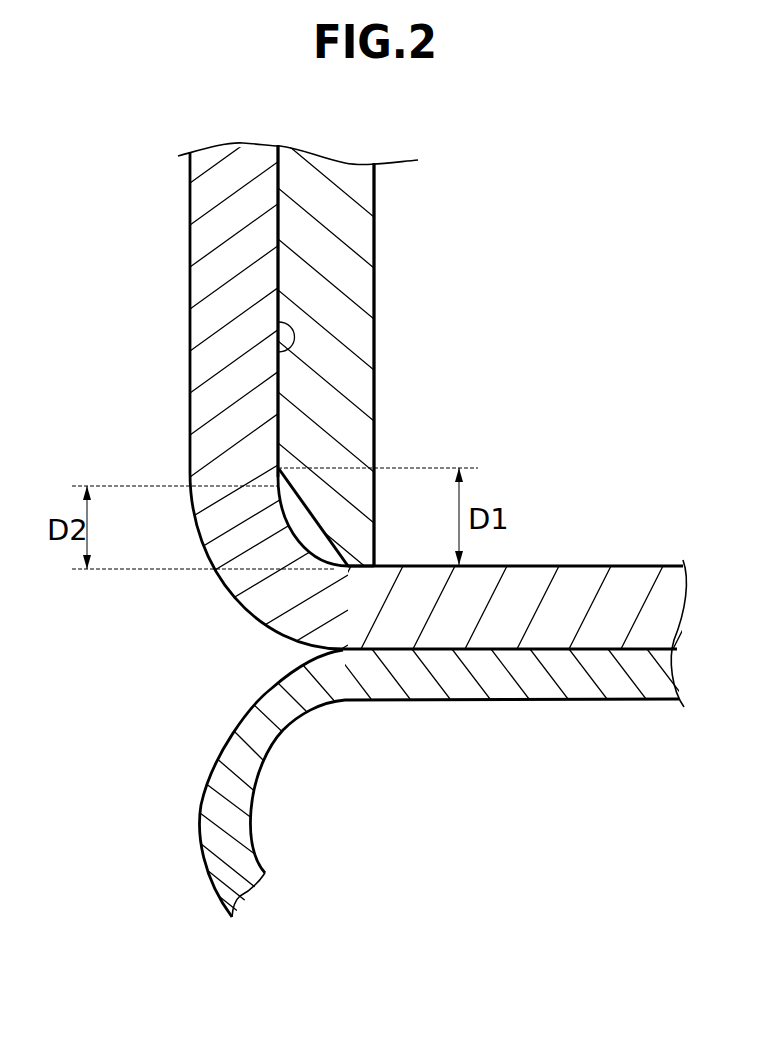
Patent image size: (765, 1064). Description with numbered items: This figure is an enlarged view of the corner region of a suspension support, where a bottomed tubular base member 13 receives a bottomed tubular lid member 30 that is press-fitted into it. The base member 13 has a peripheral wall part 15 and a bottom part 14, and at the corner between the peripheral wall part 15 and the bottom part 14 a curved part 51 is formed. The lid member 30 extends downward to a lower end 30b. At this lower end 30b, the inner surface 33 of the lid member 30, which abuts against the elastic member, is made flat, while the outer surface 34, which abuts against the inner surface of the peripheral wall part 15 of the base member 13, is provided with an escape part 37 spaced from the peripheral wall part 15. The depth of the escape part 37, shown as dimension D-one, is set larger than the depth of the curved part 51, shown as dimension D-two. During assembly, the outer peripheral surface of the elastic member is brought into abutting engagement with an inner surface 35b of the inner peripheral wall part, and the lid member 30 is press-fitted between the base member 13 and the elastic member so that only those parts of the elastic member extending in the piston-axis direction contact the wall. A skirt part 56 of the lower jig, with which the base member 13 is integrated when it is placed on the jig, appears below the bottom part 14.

The base member 13 is at (186, 190).
The bottom part 14 is at (515, 622).
The peripheral wall part 15 is at (205, 236).
The lid member 30 is at (382, 246).
The inner surface 33 is at (378, 293).
The outer surface 34 is at (272, 270).
The inner surface of the inner peripheral wall part 35b is at (290, 330).
The escape part 37 is at (278, 512).
The curved part 51 is at (202, 543).
The skirt part 56 is at (208, 805).
The lower end 30b is at (367, 569).